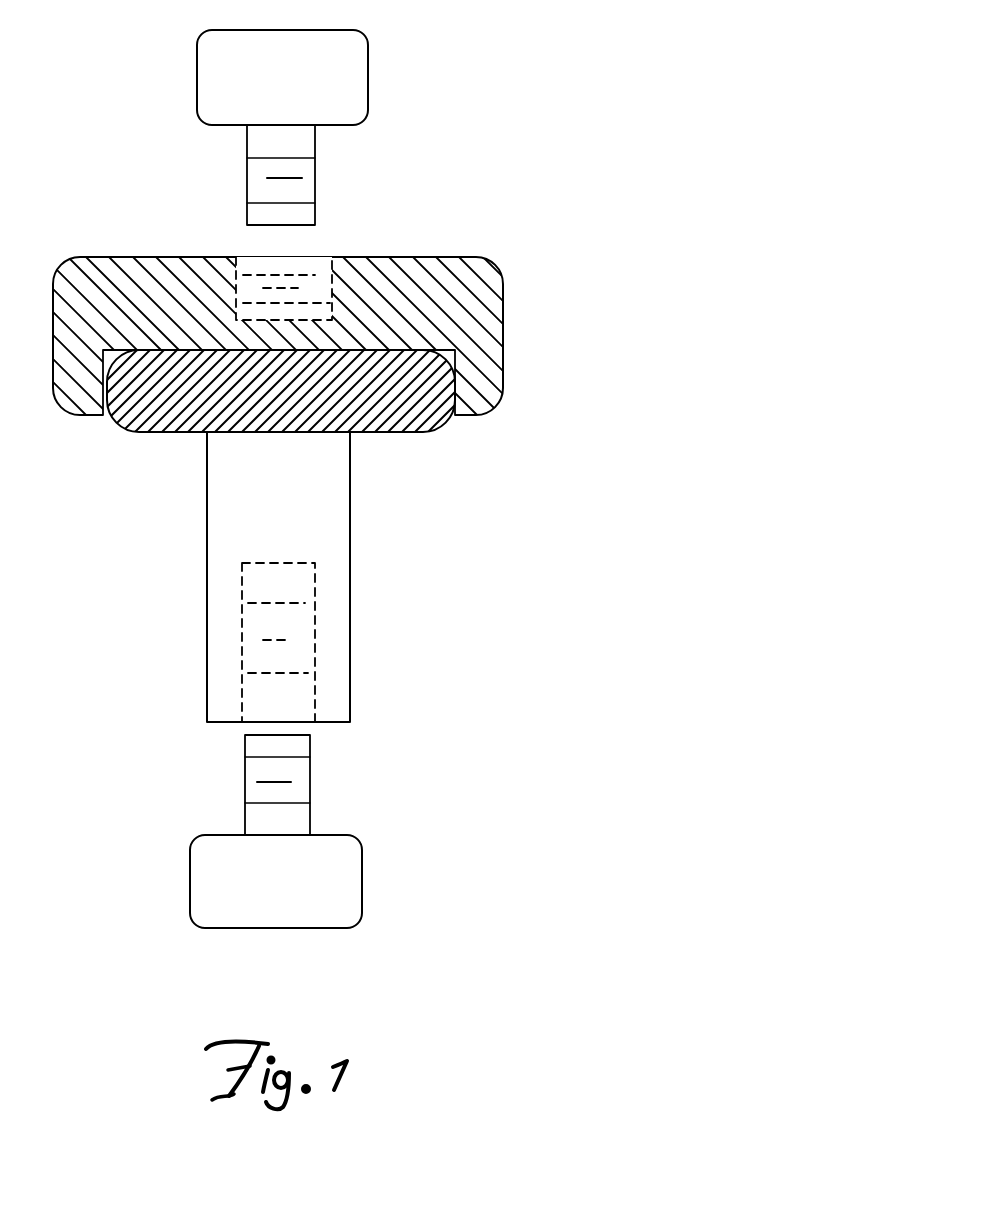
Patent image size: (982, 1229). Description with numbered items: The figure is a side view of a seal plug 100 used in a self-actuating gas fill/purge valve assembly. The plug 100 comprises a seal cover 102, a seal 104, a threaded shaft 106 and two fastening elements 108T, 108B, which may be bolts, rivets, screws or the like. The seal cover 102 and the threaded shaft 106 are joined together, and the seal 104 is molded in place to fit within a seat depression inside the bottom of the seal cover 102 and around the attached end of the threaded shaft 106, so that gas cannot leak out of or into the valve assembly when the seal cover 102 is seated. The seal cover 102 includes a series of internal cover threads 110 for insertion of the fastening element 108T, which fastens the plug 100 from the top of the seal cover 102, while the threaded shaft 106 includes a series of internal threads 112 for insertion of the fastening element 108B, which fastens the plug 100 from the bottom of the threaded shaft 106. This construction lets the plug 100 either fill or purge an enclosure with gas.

The seal plug 100 is at (704, 119).
The seal cover 102 is at (410, 257).
The seal 104 is at (455, 363).
The threaded shaft 106 is at (350, 625).
The fastening element 108T is at (368, 78).
The fastening element 108B is at (362, 880).
The internal cover threads 110 is at (247, 256).
The internal threads 112 is at (242, 630).